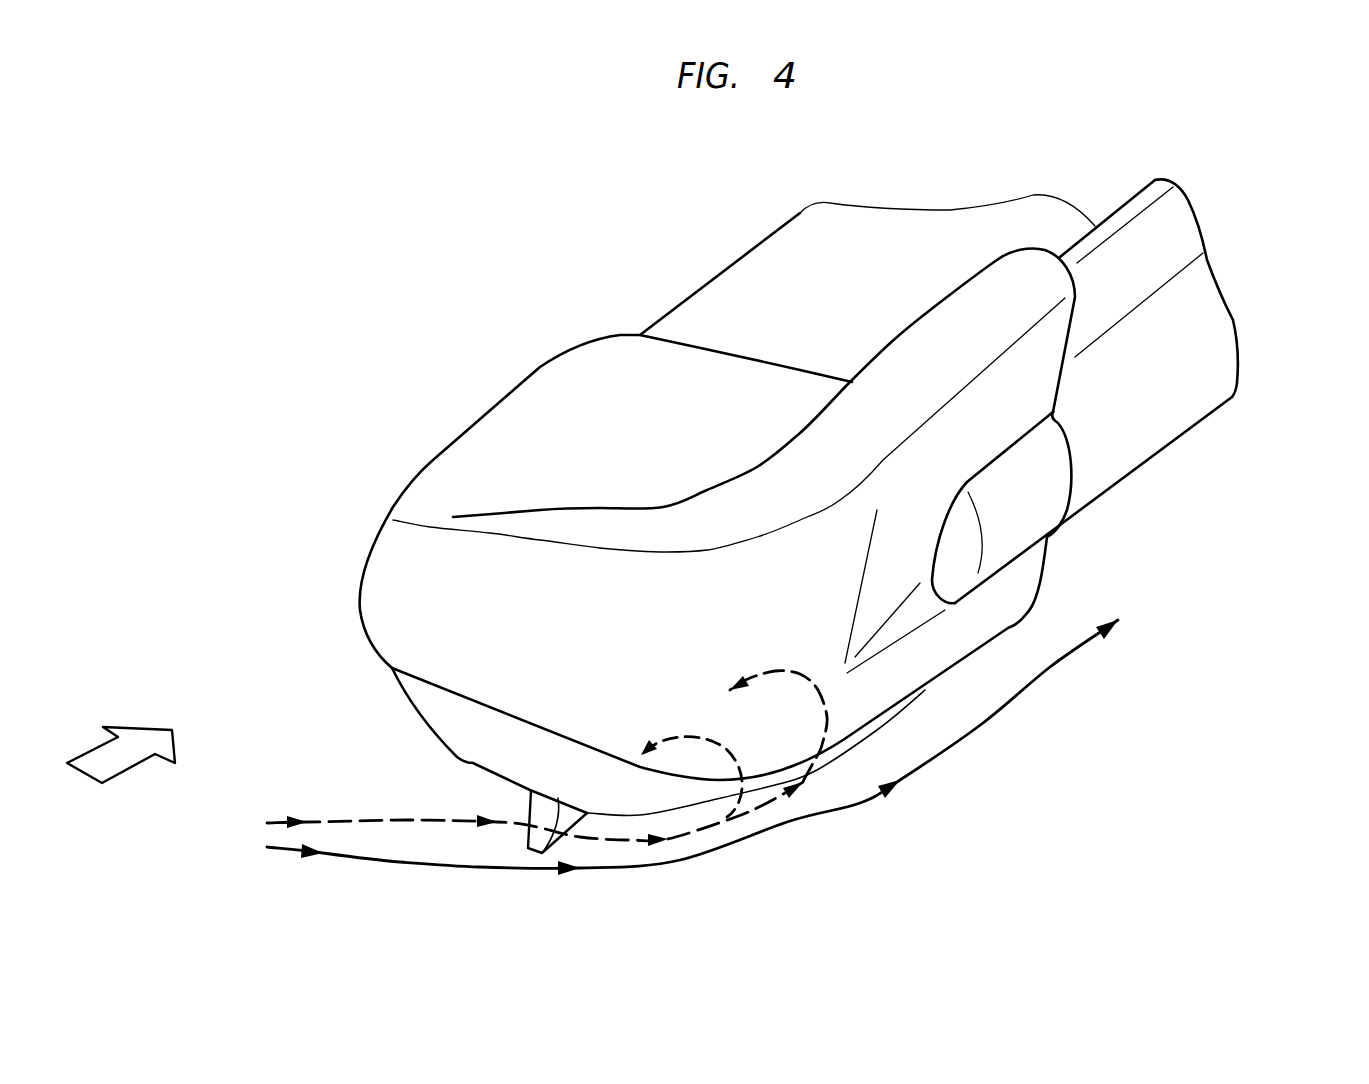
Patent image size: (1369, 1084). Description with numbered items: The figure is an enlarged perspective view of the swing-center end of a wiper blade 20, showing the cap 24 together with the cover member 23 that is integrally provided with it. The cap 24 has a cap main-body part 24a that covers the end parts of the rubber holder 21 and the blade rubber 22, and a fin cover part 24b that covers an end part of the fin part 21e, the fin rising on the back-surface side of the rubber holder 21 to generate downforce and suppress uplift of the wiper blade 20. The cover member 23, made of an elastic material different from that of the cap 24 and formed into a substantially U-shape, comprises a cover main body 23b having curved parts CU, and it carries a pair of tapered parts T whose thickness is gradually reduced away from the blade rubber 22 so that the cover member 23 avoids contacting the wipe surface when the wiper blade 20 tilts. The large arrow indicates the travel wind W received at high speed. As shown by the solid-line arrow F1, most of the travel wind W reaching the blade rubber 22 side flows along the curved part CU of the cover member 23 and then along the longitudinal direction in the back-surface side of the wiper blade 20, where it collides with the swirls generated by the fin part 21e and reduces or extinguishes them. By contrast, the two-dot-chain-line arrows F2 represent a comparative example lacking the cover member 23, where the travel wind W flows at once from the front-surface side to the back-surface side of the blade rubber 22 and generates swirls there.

The wiper blade 20 is at (603, 262).
The rubber holder 21 is at (810, 313).
The fin part 21e is at (1157, 230).
The blade rubber 22 is at (533, 807).
The cover member 23 is at (400, 693).
The cover main body 23b is at (532, 750).
The cap 24 is at (540, 367).
The cap main-body part 24a is at (553, 443).
The fin cover part 24b is at (968, 330).
The curved part CU is at (423, 705).
The tapered part T is at (423, 733).
The travel wind W is at (121, 755).
The solid-line arrow F1 is at (692, 747).
The two-dot-chain-line arrows F2 is at (547, 763).